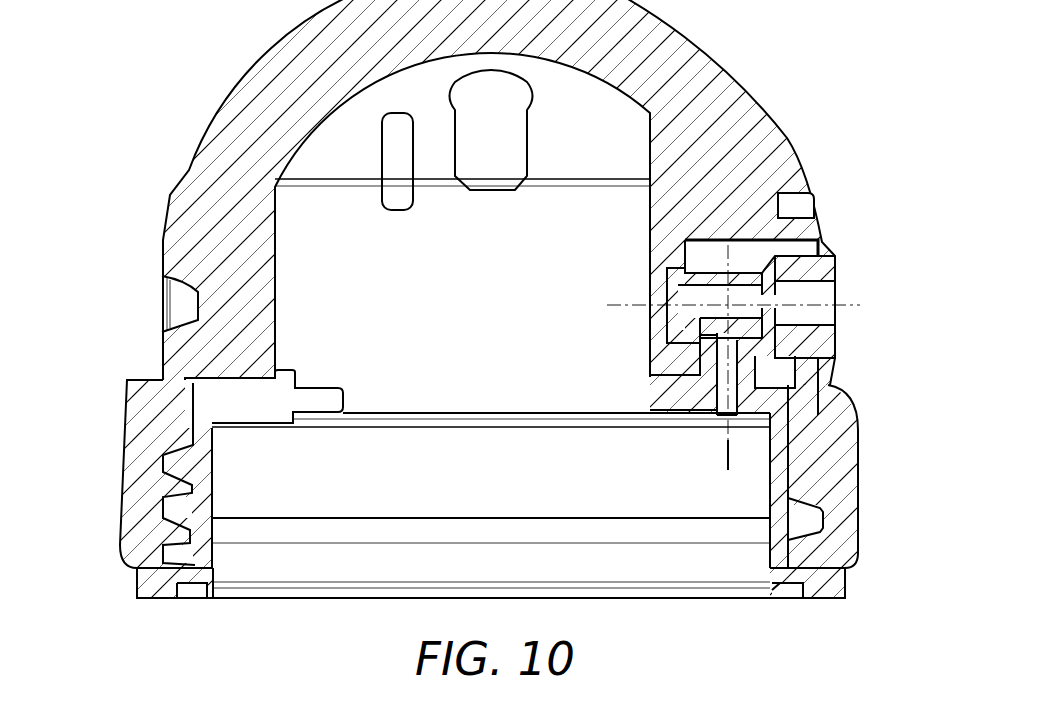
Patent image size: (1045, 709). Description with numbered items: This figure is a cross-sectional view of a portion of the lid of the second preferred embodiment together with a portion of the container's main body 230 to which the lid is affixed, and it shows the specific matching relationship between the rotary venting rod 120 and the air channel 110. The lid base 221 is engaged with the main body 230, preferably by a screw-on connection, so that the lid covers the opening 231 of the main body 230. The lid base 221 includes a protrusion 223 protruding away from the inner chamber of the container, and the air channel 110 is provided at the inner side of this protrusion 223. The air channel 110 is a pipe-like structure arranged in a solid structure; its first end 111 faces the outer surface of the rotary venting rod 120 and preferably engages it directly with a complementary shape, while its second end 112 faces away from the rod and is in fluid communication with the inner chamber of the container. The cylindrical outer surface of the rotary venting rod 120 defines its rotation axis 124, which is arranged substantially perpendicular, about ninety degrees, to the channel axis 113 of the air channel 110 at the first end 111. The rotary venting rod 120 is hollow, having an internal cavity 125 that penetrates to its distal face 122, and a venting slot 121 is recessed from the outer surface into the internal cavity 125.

The air channel 110 is at (735, 383).
The first end 111 is at (738, 338).
The second end 112 is at (735, 407).
The channel axis 113 is at (735, 467).
The rotary venting rod 120 is at (835, 249).
The venting slot 121 is at (745, 325).
The distal face 122 is at (677, 291).
The rotation axis 124 is at (858, 305).
The internal cavity 125 is at (692, 314).
The lid base 221 is at (128, 547).
The protrusion 223 is at (705, 363).
The main body 230 is at (137, 580).
The opening 231 is at (512, 489).